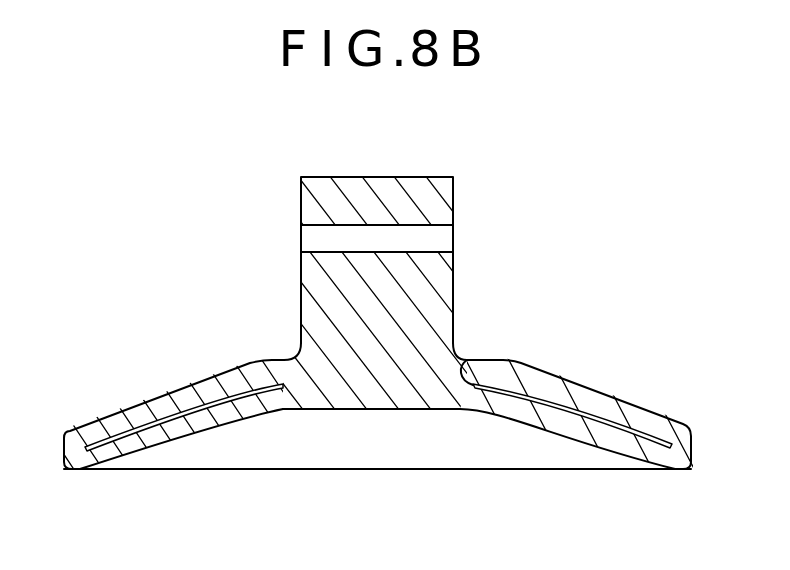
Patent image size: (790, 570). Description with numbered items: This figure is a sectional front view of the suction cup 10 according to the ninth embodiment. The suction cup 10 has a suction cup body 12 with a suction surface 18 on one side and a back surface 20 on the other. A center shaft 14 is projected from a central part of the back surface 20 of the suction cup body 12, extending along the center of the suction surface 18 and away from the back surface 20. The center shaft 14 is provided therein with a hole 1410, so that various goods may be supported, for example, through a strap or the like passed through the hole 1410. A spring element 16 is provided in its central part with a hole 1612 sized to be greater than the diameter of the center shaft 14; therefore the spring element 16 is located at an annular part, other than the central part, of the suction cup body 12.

The suction cup 10 is at (574, 186).
The suction cup body 12 is at (643, 408).
The center shaft 14 is at (453, 185).
The hole 1410 is at (316, 237).
The spring element 16 is at (530, 390).
The hole 1612 is at (466, 360).
The suction surface 18 is at (201, 437).
The back surface 20 is at (162, 392).